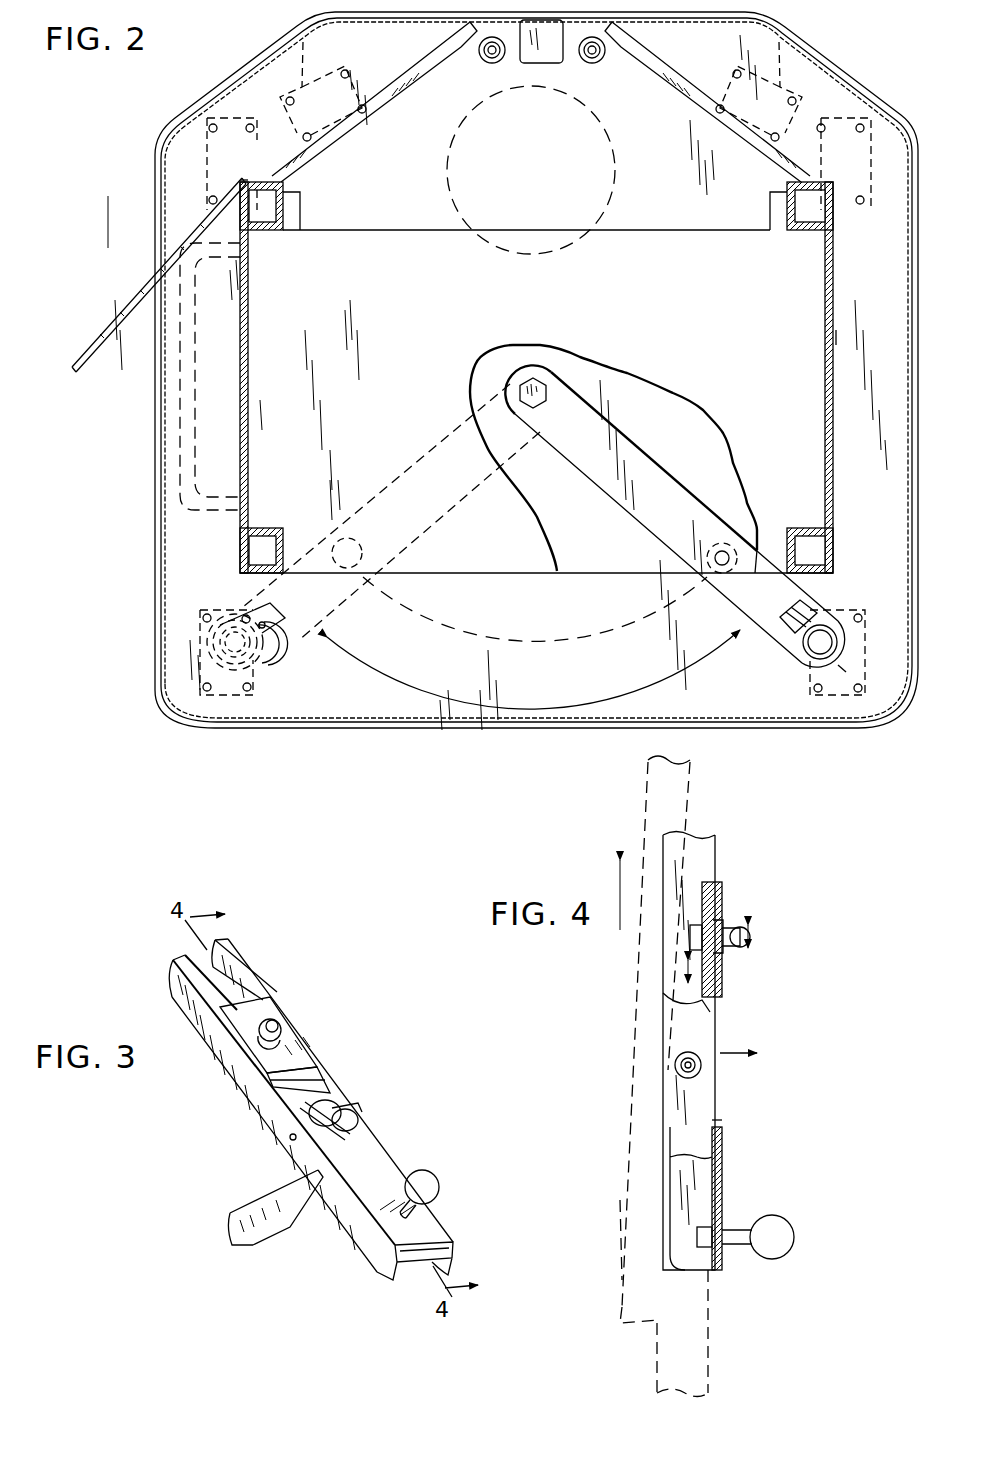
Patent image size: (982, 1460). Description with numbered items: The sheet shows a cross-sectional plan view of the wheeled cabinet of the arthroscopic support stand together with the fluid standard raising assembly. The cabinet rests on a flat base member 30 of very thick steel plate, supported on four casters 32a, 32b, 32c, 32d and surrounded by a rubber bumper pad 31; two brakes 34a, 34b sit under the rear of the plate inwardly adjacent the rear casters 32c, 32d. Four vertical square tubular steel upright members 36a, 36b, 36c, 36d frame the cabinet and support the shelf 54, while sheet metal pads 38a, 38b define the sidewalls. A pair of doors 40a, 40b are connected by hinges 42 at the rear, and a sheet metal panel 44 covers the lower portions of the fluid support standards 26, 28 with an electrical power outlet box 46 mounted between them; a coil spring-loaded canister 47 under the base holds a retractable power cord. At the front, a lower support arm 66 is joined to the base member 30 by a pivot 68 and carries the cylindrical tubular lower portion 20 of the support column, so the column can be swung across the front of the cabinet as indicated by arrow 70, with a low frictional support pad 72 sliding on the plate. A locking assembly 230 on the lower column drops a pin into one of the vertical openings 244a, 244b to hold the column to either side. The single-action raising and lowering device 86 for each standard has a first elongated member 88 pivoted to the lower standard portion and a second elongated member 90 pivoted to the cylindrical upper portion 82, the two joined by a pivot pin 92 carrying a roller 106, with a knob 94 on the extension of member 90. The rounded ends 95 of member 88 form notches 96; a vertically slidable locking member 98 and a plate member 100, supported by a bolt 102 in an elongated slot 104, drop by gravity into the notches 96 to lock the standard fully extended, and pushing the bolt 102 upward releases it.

In FIG. 2, the cylindrical tubular lower portion 20 is at (812, 672).
In FIG. 2, the fluid support standard 26 is at (480, 60).
In FIG. 2, the fluid support standard 28 is at (603, 60).
In FIG. 2, the base member 30 is at (397, 171).
In FIG. 2, the rubber bumper pad 31 is at (160, 690).
In FIG. 2, the caster 32a is at (200, 635).
In FIG. 2, the caster 32b is at (872, 690).
In FIG. 2, the rear caster 32c is at (210, 125).
In FIG. 2, the rear caster 32d is at (862, 88).
In FIG. 2, the brake 34a is at (303, 42).
In FIG. 2, the brake 34b is at (775, 62).
In FIG. 2, the vertical square tubular steel upright member 36a is at (262, 528).
In FIG. 2, the vertical square tubular steel upright member 36b is at (806, 528).
In FIG. 2, the vertical square tubular steel upright member 36c is at (268, 228).
In FIG. 2, the vertical square tubular steel upright member 36d is at (812, 228).
In FIG. 2, the sheet metal pad 38a is at (240, 350).
In FIG. 2, the sheet metal pad 38b is at (835, 338).
In FIG. 2, the door 40a is at (122, 318).
In FIG. 2, the door 40b is at (655, 50).
In FIG. 2, the hinge 42 is at (240, 180).
In FIG. 2, the sheet metal panel 44 is at (462, 24).
In FIG. 2, the electrical power outlet box 46 is at (535, 63).
In FIG. 2, the coil spring-loaded canister 47 is at (615, 185).
In FIG. 2, the shelf 54 is at (532, 306).
In FIG. 2, the lower support arm 66 is at (668, 528).
In FIG. 2, the pivot 68 is at (548, 392).
In FIG. 2, the arrow 70 is at (450, 708).
In FIG. 2, the low frictional support pad 72 is at (718, 543).
In FIG. 4, the cylindrical upper portion 82 is at (628, 1215).
In FIG. 3, the single-action raising and lowering device 86 is at (217, 1128).
In FIG. 4, the single-action raising and lowering device 86 is at (790, 1104).
In FIG. 3, the first elongated member 88 is at (262, 1247).
In FIG. 4, the first elongated member 88 is at (710, 1355).
In FIG. 3, the second elongated member 90 is at (390, 1265).
In FIG. 4, the second elongated member 90 is at (717, 865).
In FIG. 3, the pivot pin 92 is at (290, 1138).
In FIG. 4, the pivot pin 92 is at (675, 1067).
In FIG. 3, the knob 94 is at (440, 1190).
In FIG. 4, the knob 94 is at (795, 1237).
In FIG. 3, the end 95 is at (350, 1108).
In FIG. 4, the end 95 is at (663, 990).
In FIG. 3, the notch 96 is at (360, 1120).
In FIG. 4, the notch 96 is at (718, 1017).
In FIG. 3, the locking member 98 is at (318, 1058).
In FIG. 4, the locking member 98 is at (723, 897).
In FIG. 3, the plate member 100 is at (330, 1085).
In FIG. 3, the bolt 102 is at (283, 1028).
In FIG. 4, the bolt 102 is at (740, 948).
In FIG. 3, the elongated slot 104 is at (270, 1018).
In FIG. 4, the elongated slot 104 is at (735, 925).
In FIG. 3, the roller 106 is at (360, 1138).
In FIG. 4, the roller 106 is at (707, 1050).
In FIG. 2, the locking assembly 230 is at (798, 650).
In FIG. 2, the vertical opening 244a is at (266, 652).
In FIG. 2, the vertical opening 244b is at (818, 598).